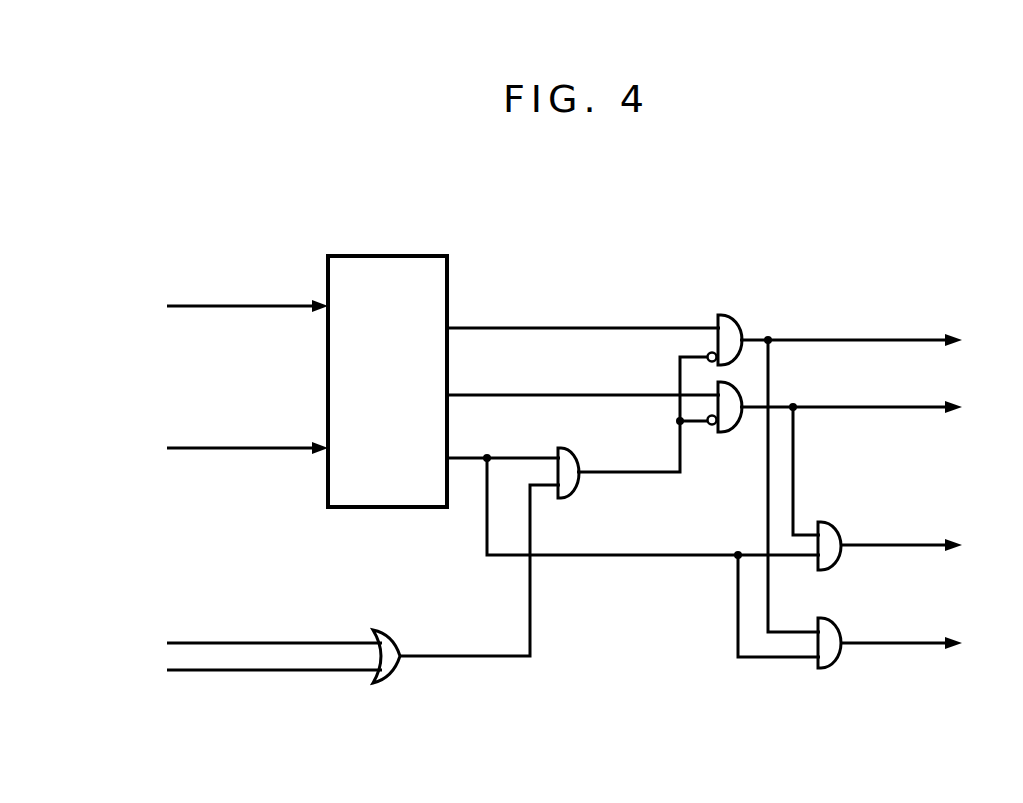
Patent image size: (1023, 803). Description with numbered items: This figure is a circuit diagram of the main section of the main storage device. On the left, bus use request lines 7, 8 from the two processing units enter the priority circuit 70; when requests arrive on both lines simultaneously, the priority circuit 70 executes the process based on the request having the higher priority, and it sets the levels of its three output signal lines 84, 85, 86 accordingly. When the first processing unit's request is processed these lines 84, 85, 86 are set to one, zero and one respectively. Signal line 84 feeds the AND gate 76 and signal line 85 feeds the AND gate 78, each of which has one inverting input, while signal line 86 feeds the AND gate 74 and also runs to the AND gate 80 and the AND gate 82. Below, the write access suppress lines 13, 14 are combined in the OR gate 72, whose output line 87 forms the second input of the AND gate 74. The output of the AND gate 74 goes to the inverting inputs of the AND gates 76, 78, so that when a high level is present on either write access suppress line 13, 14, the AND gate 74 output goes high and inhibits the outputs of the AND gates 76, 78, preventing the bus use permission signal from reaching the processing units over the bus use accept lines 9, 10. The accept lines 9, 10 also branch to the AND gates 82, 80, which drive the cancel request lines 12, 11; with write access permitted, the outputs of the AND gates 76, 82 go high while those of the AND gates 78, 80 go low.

The priority circuit 70 is at (375, 256).
The bus use request line 7 is at (192, 306).
The bus use request line 8 is at (187, 448).
The signal line 84 is at (535, 328).
The signal line 85 is at (533, 395).
The signal line 86 is at (468, 458).
The AND gate 74 is at (572, 460).
The AND gate 76 is at (731, 320).
The AND gate 78 is at (729, 434).
The AND gate 80 is at (829, 540).
The AND gate 82 is at (834, 636).
The OR gate 72 is at (399, 662).
The OR gate output line 87 is at (530, 628).
The bus use accept line 9 is at (918, 339).
The bus use accept line 10 is at (906, 407).
The cancel request line 11 is at (915, 545).
The cancel request line 12 is at (919, 643).
The write access suppress line 13 is at (206, 643).
The write access suppress line 14 is at (207, 672).